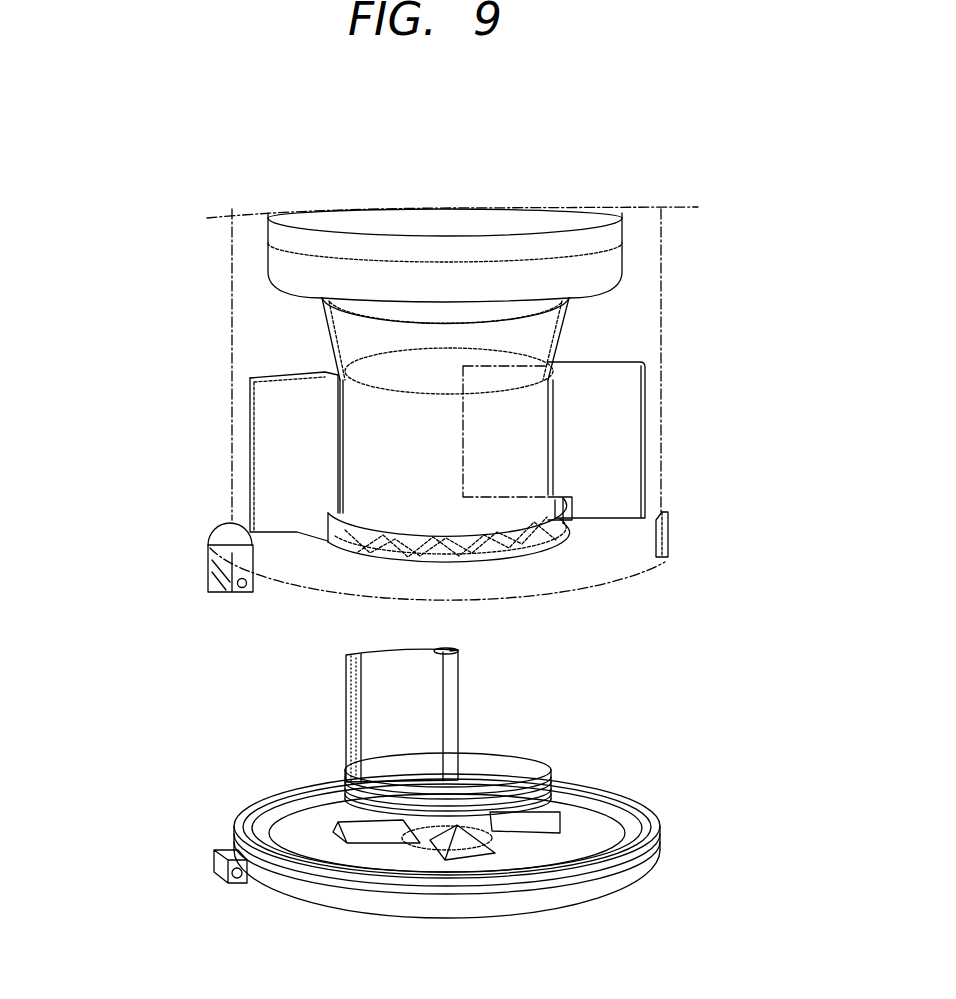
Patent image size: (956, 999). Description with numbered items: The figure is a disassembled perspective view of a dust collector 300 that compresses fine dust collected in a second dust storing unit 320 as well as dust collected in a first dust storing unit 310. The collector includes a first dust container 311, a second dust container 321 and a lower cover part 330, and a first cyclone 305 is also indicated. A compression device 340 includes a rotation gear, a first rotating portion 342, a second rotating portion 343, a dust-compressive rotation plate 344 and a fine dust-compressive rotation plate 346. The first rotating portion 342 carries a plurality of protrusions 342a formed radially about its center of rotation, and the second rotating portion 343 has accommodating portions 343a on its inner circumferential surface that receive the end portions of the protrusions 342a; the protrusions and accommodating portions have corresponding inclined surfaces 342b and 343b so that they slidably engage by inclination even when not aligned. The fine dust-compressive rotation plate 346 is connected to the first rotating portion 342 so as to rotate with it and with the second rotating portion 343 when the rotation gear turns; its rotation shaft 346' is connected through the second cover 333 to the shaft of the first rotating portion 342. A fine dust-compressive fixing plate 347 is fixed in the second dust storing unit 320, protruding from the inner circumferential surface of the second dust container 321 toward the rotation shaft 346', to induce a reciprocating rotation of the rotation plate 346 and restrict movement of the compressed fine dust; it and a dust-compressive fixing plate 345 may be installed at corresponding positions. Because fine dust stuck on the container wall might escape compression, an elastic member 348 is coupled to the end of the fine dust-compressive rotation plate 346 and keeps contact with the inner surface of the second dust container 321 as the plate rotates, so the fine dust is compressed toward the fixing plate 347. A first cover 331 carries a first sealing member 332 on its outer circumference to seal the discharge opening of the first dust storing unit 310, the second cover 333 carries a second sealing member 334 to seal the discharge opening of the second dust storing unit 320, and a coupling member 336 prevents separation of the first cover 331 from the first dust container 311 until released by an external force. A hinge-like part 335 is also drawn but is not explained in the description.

The dust collector 300 is at (182, 134).
The first cyclone 305 is at (222, 431).
The first dust storing unit 310 is at (254, 292).
The first dust container 311 is at (290, 302).
The second dust storing unit 320 is at (359, 344).
The second dust container 321 is at (326, 330).
The lower cover part 330 is at (808, 758).
The first cover 331 is at (652, 878).
The first sealing member 332 is at (662, 827).
The second cover 333 is at (540, 763).
The second sealing member 334 is at (548, 775).
The hinge 335 is at (232, 592).
The coupling member 336 is at (670, 531).
The compression device 340 is at (88, 452).
The first rotating portion 342 is at (395, 833).
The protrusion 342a is at (465, 852).
The inclined surface 342b is at (420, 848).
The second rotating portion 343 is at (255, 543).
The accommodating portion 343a is at (560, 548).
The inclined surface 343b is at (555, 556).
The dust-compressive rotation plate 344 is at (265, 462).
The dust-compressive fixing plate 345 is at (635, 409).
The fine dust-compressive rotation plate 346 is at (275, 705).
The rotation shaft 346' is at (495, 656).
The fine dust-compressive fixing plate 347 is at (520, 345).
The elastic member 348 is at (345, 716).